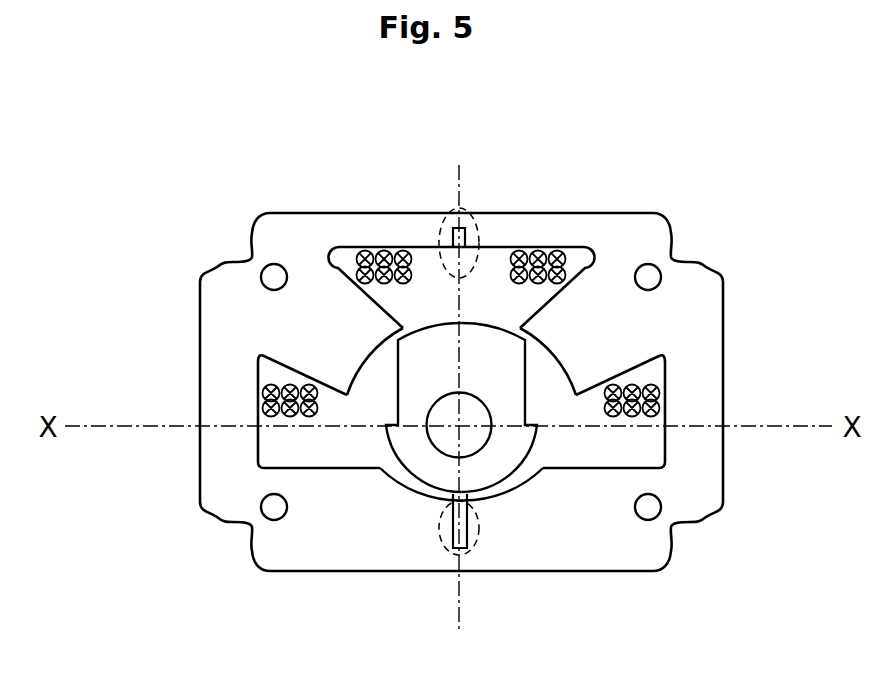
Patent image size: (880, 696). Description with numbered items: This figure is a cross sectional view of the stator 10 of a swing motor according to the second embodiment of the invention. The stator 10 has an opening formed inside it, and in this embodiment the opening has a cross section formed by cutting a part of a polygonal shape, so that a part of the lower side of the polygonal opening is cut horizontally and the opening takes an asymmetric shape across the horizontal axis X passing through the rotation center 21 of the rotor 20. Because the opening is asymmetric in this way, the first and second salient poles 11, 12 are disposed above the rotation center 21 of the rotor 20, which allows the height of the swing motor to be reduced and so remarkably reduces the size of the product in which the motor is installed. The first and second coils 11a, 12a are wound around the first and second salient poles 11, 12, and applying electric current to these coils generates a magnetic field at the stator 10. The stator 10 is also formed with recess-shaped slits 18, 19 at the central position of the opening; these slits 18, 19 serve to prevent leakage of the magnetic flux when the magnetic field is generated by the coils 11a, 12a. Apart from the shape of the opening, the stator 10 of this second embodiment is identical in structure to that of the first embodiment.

The stator 10 is at (200, 369).
The first salient pole 11 is at (564, 357).
The second salient pole 12 is at (360, 357).
The first coil 11a is at (560, 250).
The second coil 12a is at (264, 388).
The slit 18 is at (477, 215).
The slit 19 is at (479, 527).
The rotor 20 is at (461, 412).
The rotation center 21 is at (459, 425).